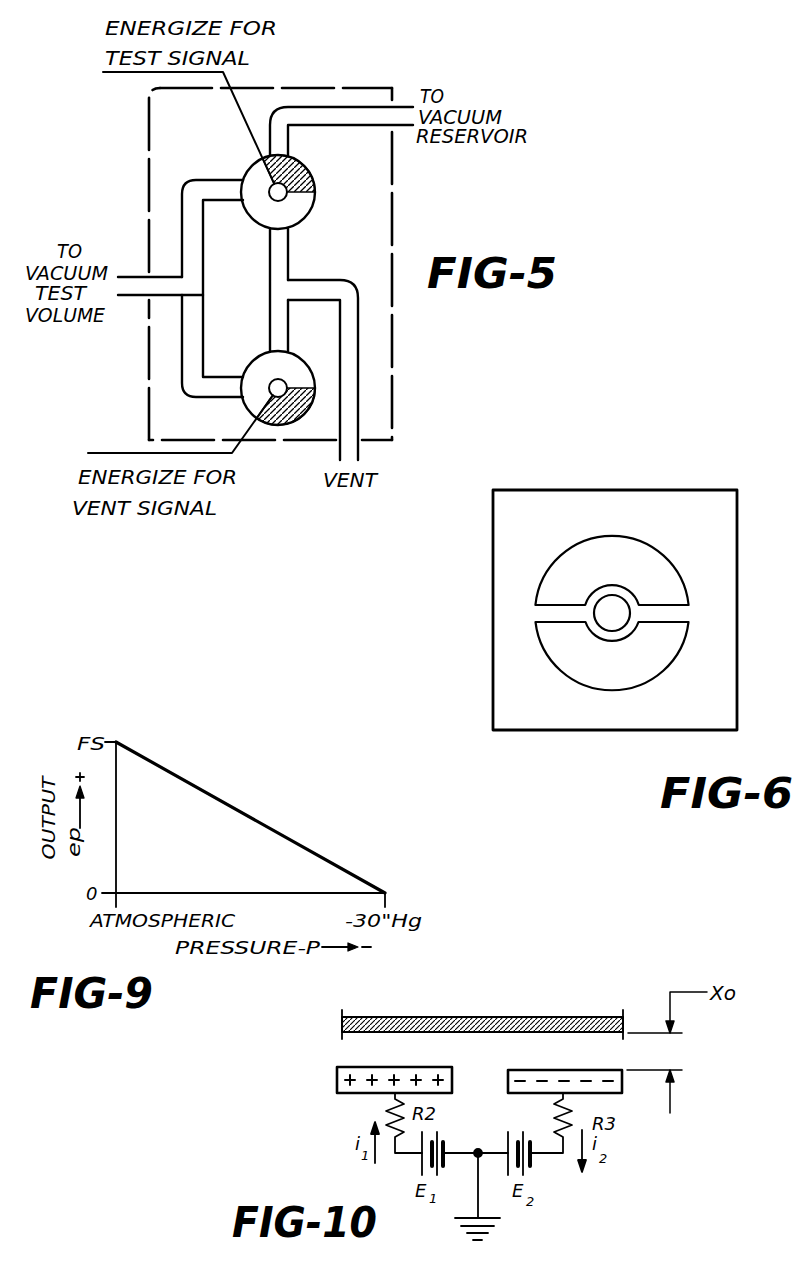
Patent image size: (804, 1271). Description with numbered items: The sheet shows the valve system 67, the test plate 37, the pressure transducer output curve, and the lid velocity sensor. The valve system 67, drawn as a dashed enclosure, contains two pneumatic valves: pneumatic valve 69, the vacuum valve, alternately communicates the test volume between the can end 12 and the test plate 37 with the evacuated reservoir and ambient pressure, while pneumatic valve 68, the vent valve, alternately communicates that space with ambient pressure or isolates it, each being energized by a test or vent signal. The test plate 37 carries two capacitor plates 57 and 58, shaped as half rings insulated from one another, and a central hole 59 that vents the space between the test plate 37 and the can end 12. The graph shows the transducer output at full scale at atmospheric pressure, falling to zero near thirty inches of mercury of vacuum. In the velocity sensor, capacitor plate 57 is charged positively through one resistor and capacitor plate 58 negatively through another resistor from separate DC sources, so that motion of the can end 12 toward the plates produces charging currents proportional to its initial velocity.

In FIG. 10, the can end 12 is at (503, 1017).
In FIG. 6, the test plate 37 is at (668, 490).
In FIG. 6, the capacitor plate 57 is at (575, 678).
In FIG. 10, the capacitor plate 57 is at (337, 1070).
In FIG. 6, the capacitor plate 58 is at (648, 553).
In FIG. 10, the capacitor plate 58 is at (513, 1070).
In FIG. 6, the hole 59 is at (601, 628).
In FIG. 5, the valve system 67 is at (396, 222).
In FIG. 5, the pneumatic valve 68 is at (325, 340).
In FIG. 5, the pneumatic valve 69 is at (312, 166).